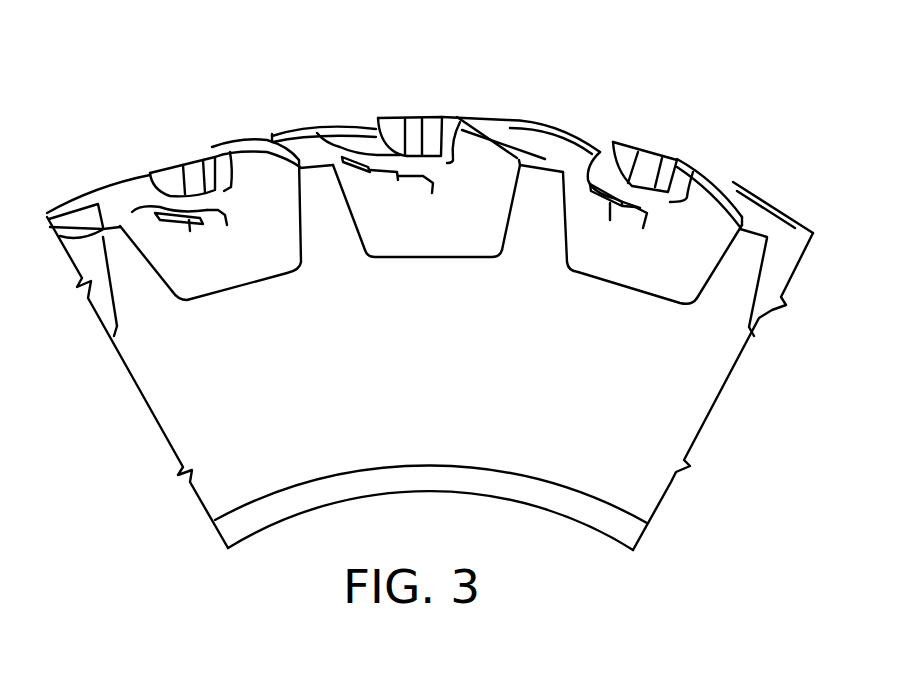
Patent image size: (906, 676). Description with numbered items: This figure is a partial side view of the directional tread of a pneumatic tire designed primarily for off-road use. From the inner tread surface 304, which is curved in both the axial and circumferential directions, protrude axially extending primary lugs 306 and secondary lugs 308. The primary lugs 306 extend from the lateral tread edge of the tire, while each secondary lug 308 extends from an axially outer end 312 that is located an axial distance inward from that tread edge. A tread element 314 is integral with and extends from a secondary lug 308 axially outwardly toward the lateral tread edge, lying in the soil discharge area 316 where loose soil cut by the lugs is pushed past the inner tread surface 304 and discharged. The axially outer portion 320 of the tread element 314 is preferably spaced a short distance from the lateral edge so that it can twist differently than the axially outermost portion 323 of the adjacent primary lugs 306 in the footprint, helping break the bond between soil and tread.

The inner tread surface 304 is at (182, 262).
The primary lugs 306 is at (270, 157).
The secondary lugs 308 is at (342, 128).
The axially outer end 312 is at (590, 148).
The tread element 314 is at (415, 122).
The soil discharge area 316 is at (398, 237).
The axially outer portion 320 is at (417, 193).
The axially outermost portion 323 is at (515, 233).